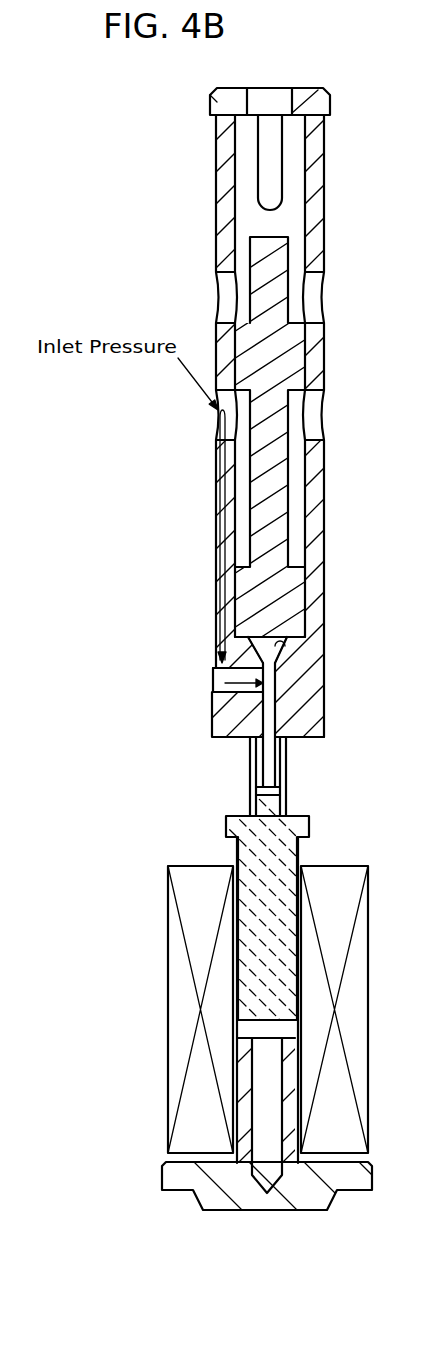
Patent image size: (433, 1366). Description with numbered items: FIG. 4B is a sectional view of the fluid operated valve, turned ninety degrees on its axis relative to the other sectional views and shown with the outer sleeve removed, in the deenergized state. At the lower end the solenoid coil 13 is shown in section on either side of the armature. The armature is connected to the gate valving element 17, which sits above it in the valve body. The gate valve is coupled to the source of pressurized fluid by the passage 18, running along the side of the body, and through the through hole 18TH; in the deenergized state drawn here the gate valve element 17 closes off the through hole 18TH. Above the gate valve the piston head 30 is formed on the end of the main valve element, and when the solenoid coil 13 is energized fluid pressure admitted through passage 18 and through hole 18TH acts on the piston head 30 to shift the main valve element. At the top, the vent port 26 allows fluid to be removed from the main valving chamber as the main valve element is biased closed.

The solenoid coil 13 is at (168, 1045).
The gate valving element 17 is at (268, 703).
The passage 18 is at (218, 572).
The through hole 18TH is at (214, 674).
The vent port 26 is at (270, 97).
The piston head 30 is at (285, 650).